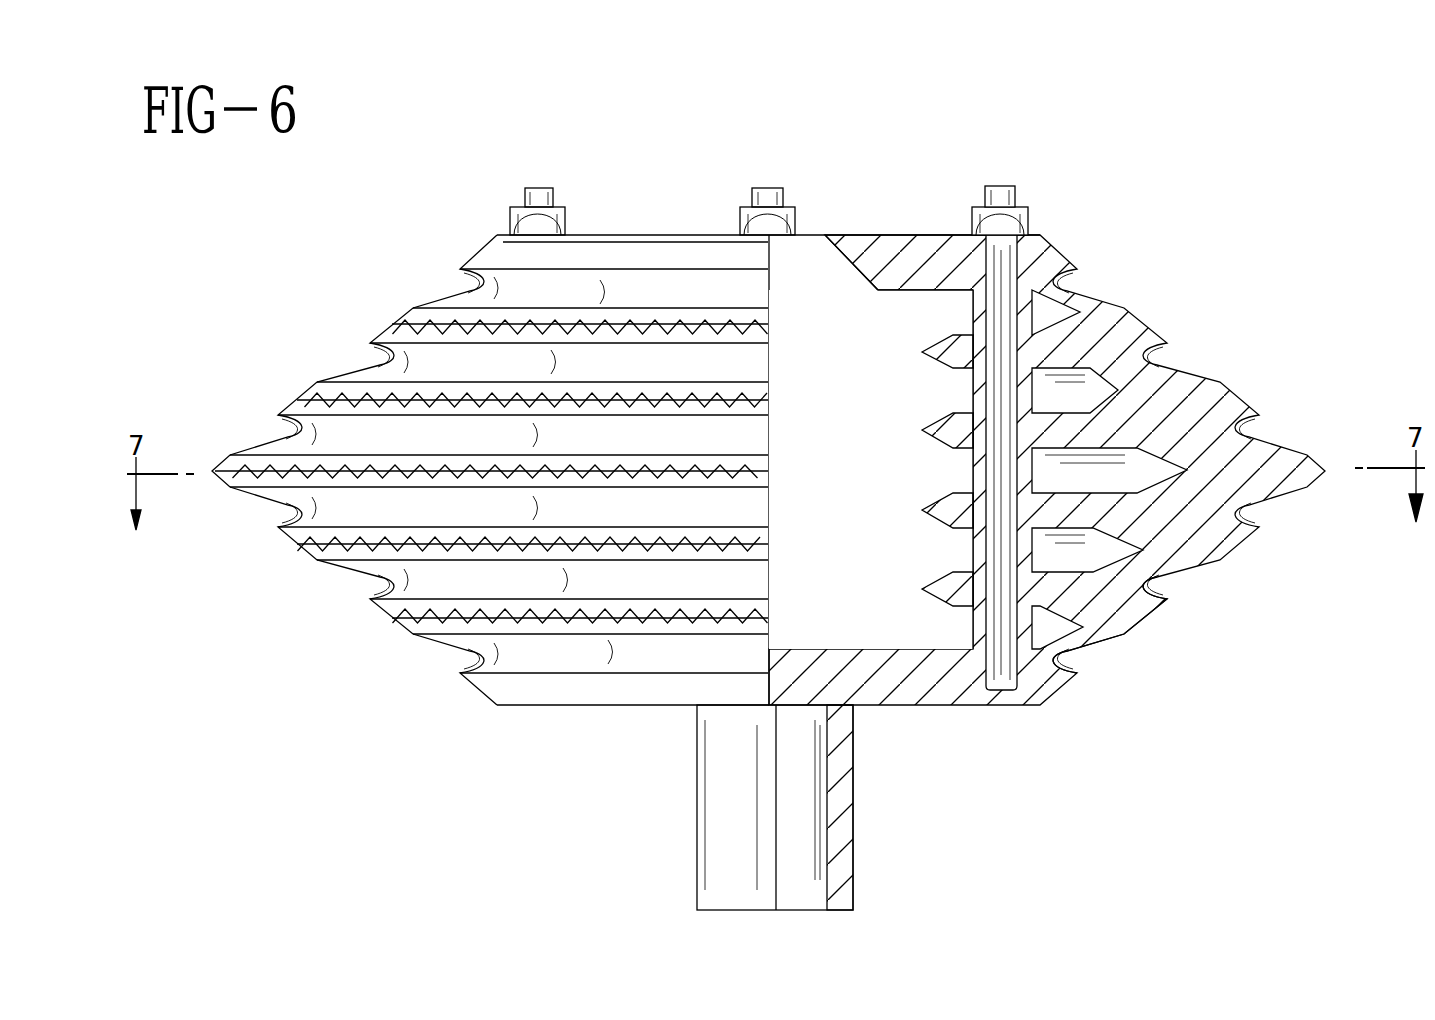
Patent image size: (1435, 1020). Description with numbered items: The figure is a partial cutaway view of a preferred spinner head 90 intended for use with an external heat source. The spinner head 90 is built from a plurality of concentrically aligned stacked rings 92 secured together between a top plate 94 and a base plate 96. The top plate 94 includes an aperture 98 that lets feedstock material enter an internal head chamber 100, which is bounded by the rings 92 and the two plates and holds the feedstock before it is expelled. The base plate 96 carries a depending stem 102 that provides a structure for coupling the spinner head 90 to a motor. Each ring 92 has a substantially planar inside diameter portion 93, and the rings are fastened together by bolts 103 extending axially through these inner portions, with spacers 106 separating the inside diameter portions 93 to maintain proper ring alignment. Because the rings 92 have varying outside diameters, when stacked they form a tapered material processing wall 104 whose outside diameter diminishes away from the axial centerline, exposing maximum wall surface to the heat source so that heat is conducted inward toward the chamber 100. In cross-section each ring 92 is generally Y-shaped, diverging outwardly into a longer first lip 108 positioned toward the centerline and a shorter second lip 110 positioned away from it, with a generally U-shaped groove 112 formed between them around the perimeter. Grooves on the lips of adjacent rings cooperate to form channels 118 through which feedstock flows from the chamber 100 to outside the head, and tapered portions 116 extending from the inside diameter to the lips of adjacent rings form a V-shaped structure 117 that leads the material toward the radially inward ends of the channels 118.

The spinner head 90 is at (938, 170).
The rings 92 is at (1068, 318).
The inside diameter portion 93 is at (935, 595).
The top plate 94 is at (652, 236).
The base plate 96 is at (558, 715).
The aperture 98 is at (778, 246).
The internal head chamber 100 is at (845, 347).
The stem 102 is at (690, 868).
The bolts 103 is at (1000, 258).
The material processing wall 104 is at (322, 392).
The spacers 106 is at (1095, 648).
The first lip 108 is at (1200, 380).
The second lip 110 is at (1072, 342).
The U-shaped groove 112 is at (1215, 430).
The tapered portions 116 is at (1150, 357).
The V-shaped structure 117 is at (1280, 482).
The channels 118 is at (462, 322).